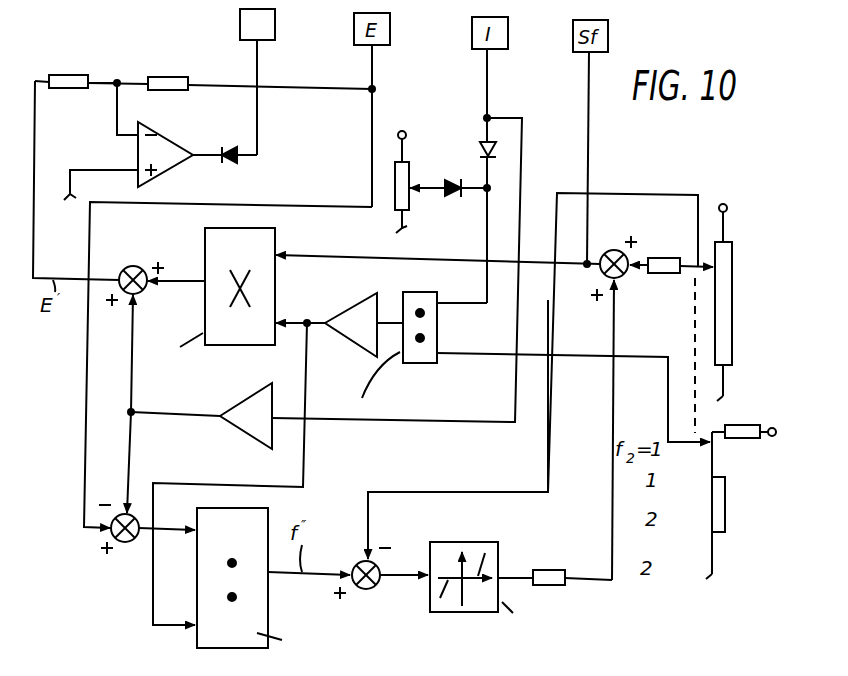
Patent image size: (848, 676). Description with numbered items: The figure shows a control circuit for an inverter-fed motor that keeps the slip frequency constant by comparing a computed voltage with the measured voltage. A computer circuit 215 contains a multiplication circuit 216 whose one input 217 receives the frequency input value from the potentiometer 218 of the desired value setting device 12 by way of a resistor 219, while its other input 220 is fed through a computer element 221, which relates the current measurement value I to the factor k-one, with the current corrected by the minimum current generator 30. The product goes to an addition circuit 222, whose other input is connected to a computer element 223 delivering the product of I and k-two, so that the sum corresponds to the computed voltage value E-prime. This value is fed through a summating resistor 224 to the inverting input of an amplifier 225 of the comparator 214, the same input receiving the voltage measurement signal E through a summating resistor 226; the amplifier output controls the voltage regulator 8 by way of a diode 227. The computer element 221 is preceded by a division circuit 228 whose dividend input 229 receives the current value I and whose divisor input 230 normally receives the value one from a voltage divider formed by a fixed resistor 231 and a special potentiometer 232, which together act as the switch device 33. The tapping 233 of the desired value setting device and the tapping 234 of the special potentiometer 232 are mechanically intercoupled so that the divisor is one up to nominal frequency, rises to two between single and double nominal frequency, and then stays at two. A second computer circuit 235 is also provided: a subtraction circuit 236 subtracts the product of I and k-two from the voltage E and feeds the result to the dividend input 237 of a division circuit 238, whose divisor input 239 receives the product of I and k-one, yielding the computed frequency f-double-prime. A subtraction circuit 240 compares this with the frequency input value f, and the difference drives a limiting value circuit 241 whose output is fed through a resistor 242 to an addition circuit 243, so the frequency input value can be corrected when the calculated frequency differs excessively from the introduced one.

The voltage regulator 8 is at (240, 23).
The desired value setting device 12 is at (718, 192).
The minimum current generator 30 is at (470, 203).
The switch device 33 is at (692, 553).
The comparator 214 is at (100, 107).
The computer circuit 215 is at (392, 378).
The multiplication circuit 216 is at (204, 316).
The input of the multiplication circuit 217 is at (342, 253).
The potentiometer 218 is at (715, 313).
The resistor 219 is at (665, 257).
The input of the multiplication circuit 220 is at (300, 322).
The computer element 221 is at (355, 343).
The addition circuit 222 is at (135, 265).
The computer element 223 is at (240, 432).
The summating resistor 224 is at (70, 74).
The amplifier 225 is at (173, 147).
The summating resistor 226 is at (172, 77).
The diode 227 is at (233, 157).
The division circuit 228 is at (438, 327).
The dividend input 229 is at (453, 302).
The divisor input 230 is at (487, 355).
The fixed resistor 231 is at (747, 438).
The special potentiometer 232 is at (725, 510).
The tapping of the desired value setting device 233 is at (695, 280).
The tapping of the special potentiometer 234 is at (677, 442).
The second computer circuit 235 is at (308, 501).
The subtraction circuit 236 is at (125, 545).
The dividend input 237 is at (170, 532).
The division circuit 238 is at (257, 613).
The divisor input 239 is at (153, 613).
The subtraction circuit 240 is at (368, 590).
The limiting value circuit 241 is at (472, 540).
The resistor 242 is at (545, 570).
The addition circuit 243 is at (612, 249).